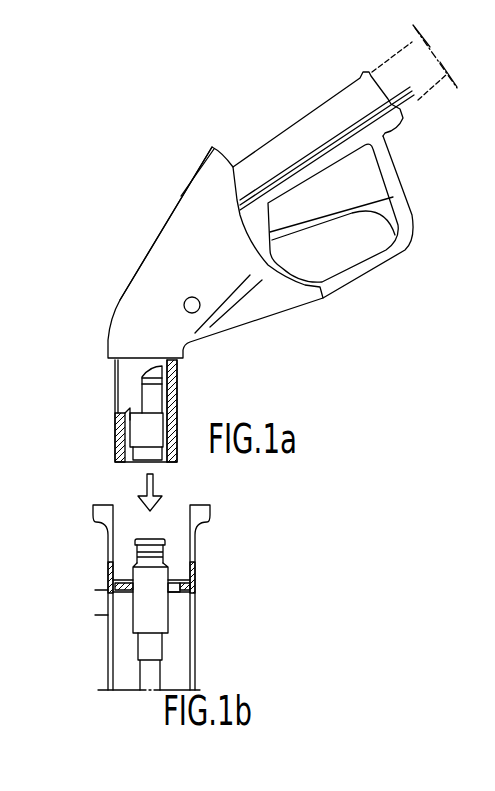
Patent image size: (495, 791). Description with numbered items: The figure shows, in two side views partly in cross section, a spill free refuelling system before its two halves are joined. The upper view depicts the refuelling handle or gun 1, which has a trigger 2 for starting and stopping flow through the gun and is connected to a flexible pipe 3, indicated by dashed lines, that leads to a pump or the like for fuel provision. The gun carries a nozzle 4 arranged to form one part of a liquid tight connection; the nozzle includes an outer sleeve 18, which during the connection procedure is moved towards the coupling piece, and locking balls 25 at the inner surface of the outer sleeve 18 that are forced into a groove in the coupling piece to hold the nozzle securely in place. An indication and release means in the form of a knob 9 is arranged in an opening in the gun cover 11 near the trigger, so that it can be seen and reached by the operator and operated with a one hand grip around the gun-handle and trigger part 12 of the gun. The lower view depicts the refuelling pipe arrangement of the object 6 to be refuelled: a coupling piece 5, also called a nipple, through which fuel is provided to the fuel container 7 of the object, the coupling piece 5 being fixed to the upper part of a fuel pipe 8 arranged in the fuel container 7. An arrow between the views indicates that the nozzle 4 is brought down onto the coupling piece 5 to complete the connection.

In FIG. 1A, the refuelling handle or gun 1 is at (147, 232).
In FIG. 1A, the trigger 2 is at (365, 204).
In FIG. 1A, the flexible pipe 3 is at (403, 38).
In FIG. 1A, the nozzle 4 is at (127, 385).
In FIG. 1B, the coupling piece or nipple 5 is at (143, 558).
In FIG. 1B, the object to be refuelled 6 is at (212, 578).
In FIG. 1B, the fuel container 7 is at (172, 670).
In FIG. 1B, the fuel pipe 8 is at (142, 672).
In FIG. 1A, the knob 9 is at (190, 175).
In FIG. 1A, the gun cover 11 is at (140, 277).
In FIG. 1A, the gun-handle and trigger part 12 is at (338, 120).
In FIG. 1A, the outer sleeve 18 is at (120, 447).
In FIG. 1A, the locking balls 25 is at (118, 423).